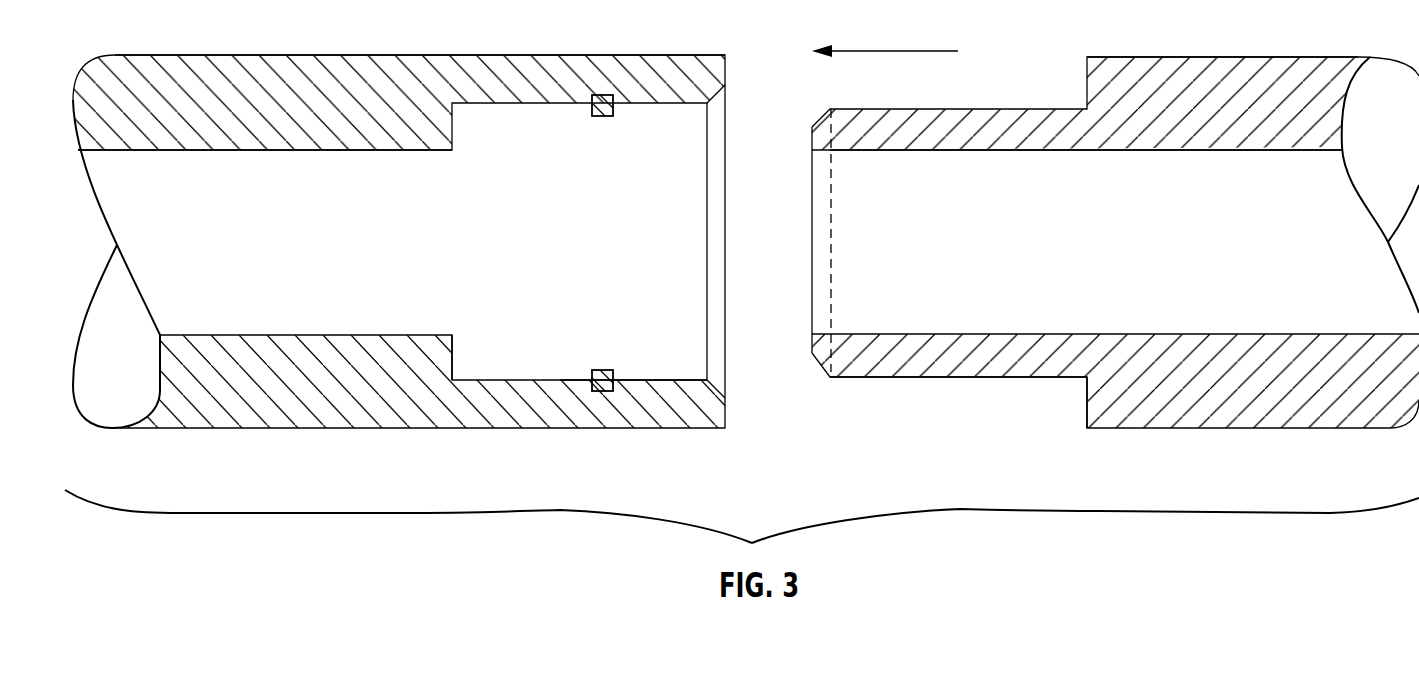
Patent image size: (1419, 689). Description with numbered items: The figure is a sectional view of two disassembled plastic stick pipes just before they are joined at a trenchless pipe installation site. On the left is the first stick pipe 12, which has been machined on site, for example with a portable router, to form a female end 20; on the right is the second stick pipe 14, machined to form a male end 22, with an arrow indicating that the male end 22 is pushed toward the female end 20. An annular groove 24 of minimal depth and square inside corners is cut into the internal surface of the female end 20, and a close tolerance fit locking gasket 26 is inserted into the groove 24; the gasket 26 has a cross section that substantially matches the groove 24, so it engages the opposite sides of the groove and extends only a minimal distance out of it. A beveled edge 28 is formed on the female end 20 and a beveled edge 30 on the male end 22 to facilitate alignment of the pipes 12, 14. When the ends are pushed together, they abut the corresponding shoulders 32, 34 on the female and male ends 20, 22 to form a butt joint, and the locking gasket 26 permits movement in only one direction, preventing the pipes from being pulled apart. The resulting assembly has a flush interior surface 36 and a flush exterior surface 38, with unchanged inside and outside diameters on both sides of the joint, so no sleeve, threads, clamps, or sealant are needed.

The first stick pipe 12 is at (323, 55).
The second stick pipe 14 is at (1157, 57).
The female end 20 is at (555, 105).
The male end 22 is at (996, 380).
The annular groove 24 is at (602, 392).
The locking gasket 26 is at (603, 369).
The beveled edge 28 is at (713, 146).
The beveled edge 30 is at (822, 213).
The shoulder 32 is at (452, 352).
The shoulder 34 is at (1086, 419).
The interior surface 36 is at (331, 151).
The exterior surface 38 is at (507, 55).